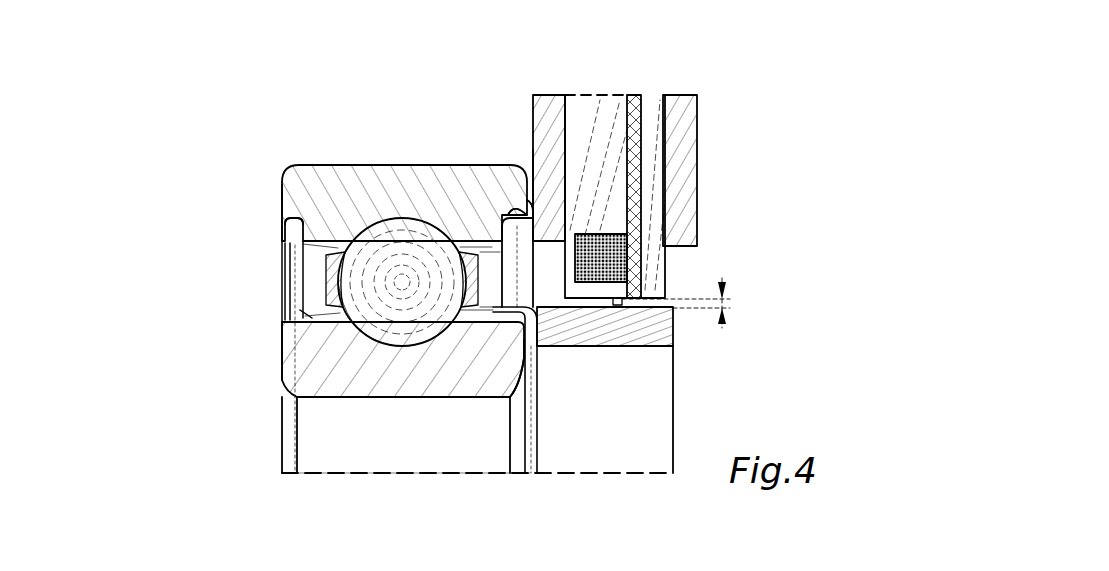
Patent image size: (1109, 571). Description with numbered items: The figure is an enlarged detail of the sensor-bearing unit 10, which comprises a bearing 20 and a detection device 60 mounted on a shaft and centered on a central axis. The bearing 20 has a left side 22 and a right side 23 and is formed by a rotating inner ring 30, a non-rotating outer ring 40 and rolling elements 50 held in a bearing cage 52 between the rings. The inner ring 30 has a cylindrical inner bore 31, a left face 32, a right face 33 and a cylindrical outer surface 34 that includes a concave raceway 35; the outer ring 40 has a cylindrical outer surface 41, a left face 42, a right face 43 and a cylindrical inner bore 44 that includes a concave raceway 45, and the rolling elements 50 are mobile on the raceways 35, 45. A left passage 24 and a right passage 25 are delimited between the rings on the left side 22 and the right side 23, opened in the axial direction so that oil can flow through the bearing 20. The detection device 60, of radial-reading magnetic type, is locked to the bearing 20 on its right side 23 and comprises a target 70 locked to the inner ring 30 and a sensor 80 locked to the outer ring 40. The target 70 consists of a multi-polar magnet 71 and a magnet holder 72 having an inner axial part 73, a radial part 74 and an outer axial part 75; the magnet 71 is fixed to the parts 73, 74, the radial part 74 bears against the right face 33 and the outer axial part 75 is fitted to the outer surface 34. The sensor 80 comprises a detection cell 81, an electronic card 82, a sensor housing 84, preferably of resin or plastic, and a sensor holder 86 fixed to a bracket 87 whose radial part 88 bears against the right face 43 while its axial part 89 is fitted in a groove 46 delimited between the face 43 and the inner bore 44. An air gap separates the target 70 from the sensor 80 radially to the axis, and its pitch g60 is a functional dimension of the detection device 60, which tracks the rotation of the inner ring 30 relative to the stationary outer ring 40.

The sensor-bearing unit 10 is at (190, 114).
The bearing 20 is at (237, 240).
The left side 22 is at (187, 350).
The right side 23 is at (815, 266).
The left passage 24 is at (290, 288).
The right passage 25 is at (500, 283).
The inner ring 30 is at (295, 380).
The inner bore 31 is at (375, 412).
The left face 32 is at (270, 356).
The right face 33 is at (538, 371).
The outer surface 34 is at (303, 314).
The raceway 35 is at (391, 334).
The outer ring 40 is at (290, 165).
The outer surface 41 is at (330, 150).
The left face 42 is at (270, 197).
The right face 43 is at (611, 100).
The inner bore 44 is at (273, 270).
The raceway 45 is at (412, 232).
The groove 46 is at (641, 222).
The rolling elements 50 is at (309, 248).
The bearing cage 52 is at (405, 165).
The detection device 60 is at (805, 195).
The target 70 is at (845, 312).
The multi-polar magnet 71 is at (665, 330).
The magnet holder 72 is at (640, 348).
The inner axial part 73 is at (592, 348).
The radial part 74 is at (530, 372).
The outer axial part 75 is at (490, 320).
The sensor 80 is at (737, 90).
The detection cell 81 is at (605, 258).
The electronic card 82 is at (543, 199).
The sensor housing 84 is at (658, 95).
The sensor holder 86 is at (548, 95).
The bracket 87 is at (463, 38).
The radial part 88 is at (535, 212).
The axial part 89 is at (510, 216).
The pitch g60 is at (693, 303).